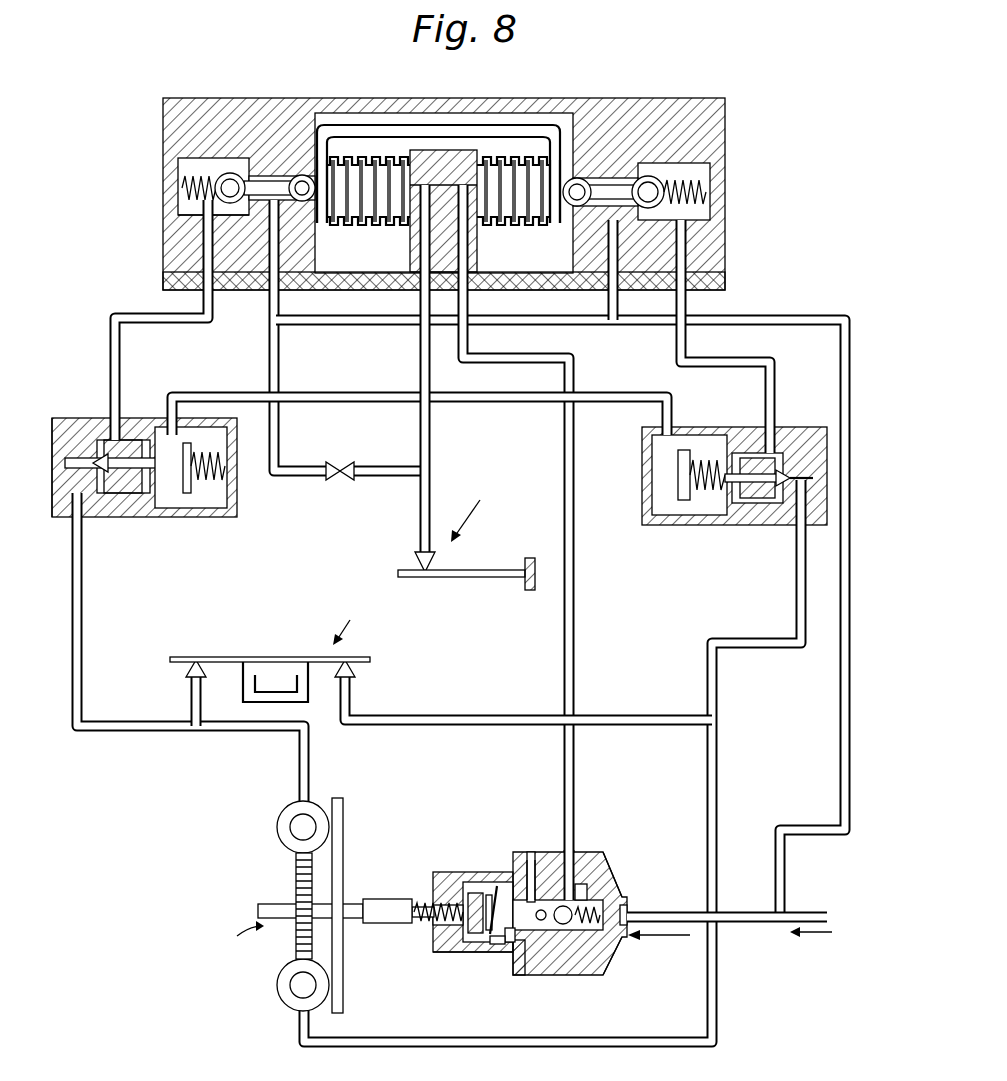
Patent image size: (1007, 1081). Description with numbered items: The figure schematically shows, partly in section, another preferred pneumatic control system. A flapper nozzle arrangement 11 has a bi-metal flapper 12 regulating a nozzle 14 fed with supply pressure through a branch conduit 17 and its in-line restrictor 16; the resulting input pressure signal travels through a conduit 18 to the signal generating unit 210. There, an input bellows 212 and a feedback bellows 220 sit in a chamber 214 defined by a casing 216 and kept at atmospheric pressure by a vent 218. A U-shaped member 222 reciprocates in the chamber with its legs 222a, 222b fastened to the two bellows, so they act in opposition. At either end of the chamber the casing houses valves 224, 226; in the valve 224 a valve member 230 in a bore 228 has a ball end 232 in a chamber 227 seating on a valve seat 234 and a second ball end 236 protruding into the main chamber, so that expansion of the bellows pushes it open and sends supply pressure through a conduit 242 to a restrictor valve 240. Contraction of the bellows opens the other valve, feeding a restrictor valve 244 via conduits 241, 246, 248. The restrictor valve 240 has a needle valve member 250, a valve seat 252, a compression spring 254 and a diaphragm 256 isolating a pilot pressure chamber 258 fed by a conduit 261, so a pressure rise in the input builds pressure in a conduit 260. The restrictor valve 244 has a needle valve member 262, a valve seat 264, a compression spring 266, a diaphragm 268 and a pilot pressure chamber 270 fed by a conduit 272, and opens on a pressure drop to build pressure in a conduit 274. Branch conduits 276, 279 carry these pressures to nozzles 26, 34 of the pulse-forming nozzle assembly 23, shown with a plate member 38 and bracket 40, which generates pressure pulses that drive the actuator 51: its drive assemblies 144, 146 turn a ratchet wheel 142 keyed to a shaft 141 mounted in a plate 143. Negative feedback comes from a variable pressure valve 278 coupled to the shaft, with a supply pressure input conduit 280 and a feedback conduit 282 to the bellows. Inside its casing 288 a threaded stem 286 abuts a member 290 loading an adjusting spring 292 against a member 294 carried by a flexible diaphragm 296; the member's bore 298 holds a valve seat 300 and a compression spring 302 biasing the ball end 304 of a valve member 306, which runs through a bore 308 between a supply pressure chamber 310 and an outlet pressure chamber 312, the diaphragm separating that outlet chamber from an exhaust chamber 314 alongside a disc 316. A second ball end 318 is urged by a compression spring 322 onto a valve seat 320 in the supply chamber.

The flapper nozzle arrangement 11 is at (470, 519).
The bi-metal flapper 12 is at (477, 570).
The nozzle 14 is at (410, 562).
The in-line restrictor 16 is at (340, 480).
The branch conduit 17 is at (280, 412).
The conduit 18 is at (431, 467).
The pulse-forming nozzle armature magnet assembly 23 is at (343, 628).
The nozzle 26 is at (186, 672).
The nozzle 34 is at (357, 672).
The plate member 38 is at (225, 657).
The bracket 40 is at (275, 683).
The actuator 51 is at (238, 933).
The shaft 141 is at (272, 904).
The ratchet wheel 142 is at (312, 947).
The plate 143 is at (343, 838).
The drive assembly 144 is at (280, 810).
The drive assembly 146 is at (277, 988).
The signal generating unit 210 is at (800, 292).
The input bellows 212 is at (360, 222).
The chamber 214 is at (560, 122).
The casing 216 is at (688, 112).
The vent 218 is at (368, 283).
The bellows 220 is at (512, 222).
The U-shaped member 222 is at (470, 126).
The leg 222a is at (330, 132).
The leg 222b is at (556, 150).
The valve 224 is at (178, 167).
The valve 226 is at (705, 168).
The chamber 227 is at (200, 165).
The bore 228 is at (252, 190).
The valve member 230 is at (266, 198).
The ball end 232 is at (228, 173).
The valve seat 234 is at (178, 211).
The ball end 236 is at (303, 175).
The restrictor valve 240 is at (164, 465).
The conduit 241 is at (838, 780).
The conduit 242 is at (121, 350).
The restrictor valve 244 is at (715, 470).
The conduit 246 is at (609, 300).
The conduit 248 is at (686, 348).
The needle valve member 250 is at (118, 507).
The valve seat 252 is at (95, 440).
The compression spring 254 is at (228, 497).
The diaphragm 256 is at (200, 510).
The pilot pressure chamber 258 is at (173, 510).
The conduit 260 is at (84, 622).
The conduit 261 is at (386, 393).
The needle valve member 262 is at (760, 516).
The valve seat 264 is at (778, 526).
The compression spring 266 is at (700, 440).
The diaphragm 268 is at (680, 516).
The pilot pressure chamber 270 is at (665, 457).
The conduit 272 is at (622, 393).
The conduit 274 is at (718, 697).
The branch conduit 276 is at (190, 700).
The variable pressure valve 278 is at (659, 938).
The branch conduit 279 is at (480, 714).
The supply pressure input conduit 280 is at (775, 923).
The feedback conduit 282 is at (575, 572).
The stem 286 is at (420, 918).
The casing 288 is at (615, 868).
The member 290 is at (445, 950).
The adjusting spring 292 is at (470, 893).
The member 294 is at (492, 944).
The flexible diaphragm 296 is at (545, 852).
The bore 298 is at (505, 890).
The valve seat 300 is at (556, 924).
The compression spring 302 is at (508, 942).
The ball end 304 is at (590, 836).
The valve member 306 is at (556, 930).
The bore 308 is at (582, 884).
The supply pressure chamber 310 is at (624, 890).
The outlet pressure chamber 312 is at (515, 960).
The exhaust chamber 314 is at (440, 874).
The disc 316 is at (498, 890).
The ball end 318 is at (606, 858).
The valve seat 320 is at (580, 950).
The compression spring 322 is at (612, 946).